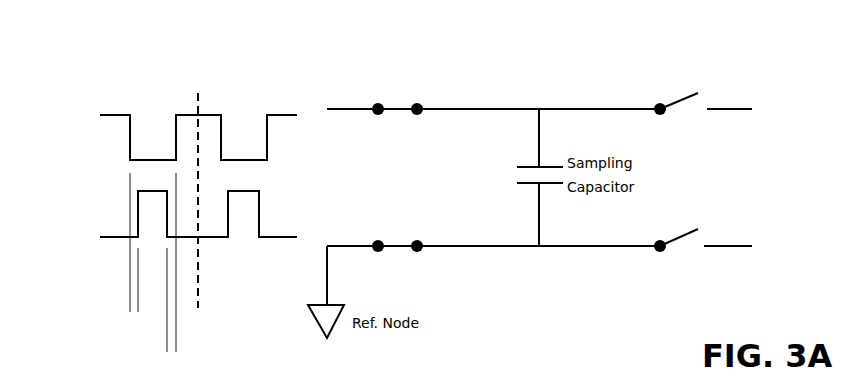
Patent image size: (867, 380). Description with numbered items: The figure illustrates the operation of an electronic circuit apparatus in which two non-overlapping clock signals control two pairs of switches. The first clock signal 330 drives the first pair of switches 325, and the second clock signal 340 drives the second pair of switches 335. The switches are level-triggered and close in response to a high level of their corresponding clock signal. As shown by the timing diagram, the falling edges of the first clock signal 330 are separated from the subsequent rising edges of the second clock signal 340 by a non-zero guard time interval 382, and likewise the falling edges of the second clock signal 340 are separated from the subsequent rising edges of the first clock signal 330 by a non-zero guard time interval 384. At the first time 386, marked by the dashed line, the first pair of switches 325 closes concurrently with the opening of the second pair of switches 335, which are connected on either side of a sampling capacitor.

The first clock signal 330 is at (116, 114).
The second clock signal 340 is at (120, 236).
The first time t(1) 386 is at (197, 172).
The guard time interval 382 is at (177, 289).
The guard time interval 384 is at (215, 327).
The first pair of switches 325 is at (400, 118).
The second pair of switches 335 is at (683, 125).